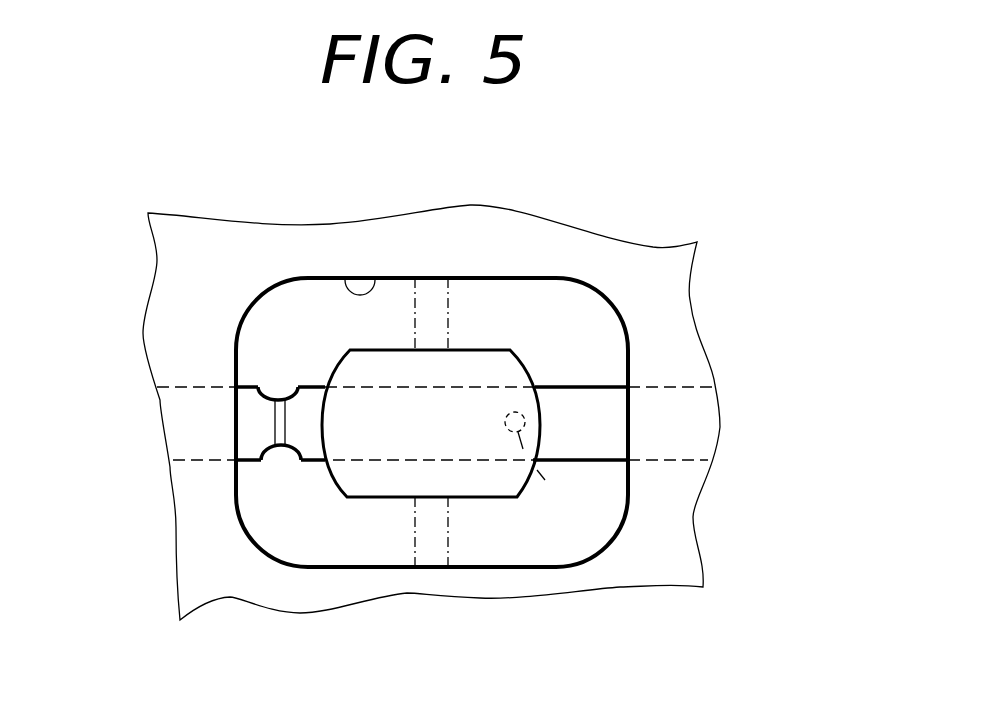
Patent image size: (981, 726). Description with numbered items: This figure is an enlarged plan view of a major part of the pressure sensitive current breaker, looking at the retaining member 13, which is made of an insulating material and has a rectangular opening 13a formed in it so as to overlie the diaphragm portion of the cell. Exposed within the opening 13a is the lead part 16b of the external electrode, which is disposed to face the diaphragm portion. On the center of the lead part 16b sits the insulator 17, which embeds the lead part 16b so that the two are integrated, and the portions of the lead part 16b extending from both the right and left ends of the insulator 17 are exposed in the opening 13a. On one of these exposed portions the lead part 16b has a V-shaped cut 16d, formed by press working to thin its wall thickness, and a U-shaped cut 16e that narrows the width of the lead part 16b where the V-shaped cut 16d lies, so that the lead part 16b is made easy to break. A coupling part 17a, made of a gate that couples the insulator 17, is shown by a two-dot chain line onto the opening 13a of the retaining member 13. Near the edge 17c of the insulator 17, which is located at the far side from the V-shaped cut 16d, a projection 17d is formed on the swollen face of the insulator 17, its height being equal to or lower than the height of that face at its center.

The retaining member 13 is at (605, 223).
The opening 13a is at (343, 277).
The lead part 16b is at (587, 407).
The V-shaped cut 16d is at (273, 422).
The U-shaped cut 16e is at (275, 393).
The insulator 17 is at (498, 349).
The coupling part 17a is at (453, 313).
The edge 17c is at (542, 438).
The projection 17d is at (537, 470).